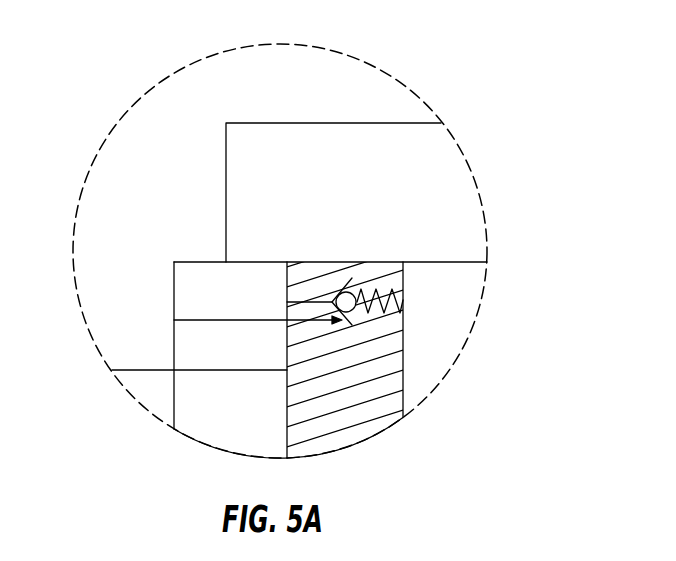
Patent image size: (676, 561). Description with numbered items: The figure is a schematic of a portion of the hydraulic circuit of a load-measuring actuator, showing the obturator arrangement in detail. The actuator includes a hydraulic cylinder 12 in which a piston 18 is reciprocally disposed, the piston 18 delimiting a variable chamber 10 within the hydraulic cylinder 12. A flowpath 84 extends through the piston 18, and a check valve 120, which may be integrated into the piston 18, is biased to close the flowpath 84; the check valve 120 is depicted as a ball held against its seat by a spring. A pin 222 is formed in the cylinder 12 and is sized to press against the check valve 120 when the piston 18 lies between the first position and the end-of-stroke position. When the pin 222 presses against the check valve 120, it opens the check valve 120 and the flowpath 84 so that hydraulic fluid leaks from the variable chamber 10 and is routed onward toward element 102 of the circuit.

The variable chamber 10 is at (448, 300).
The hydraulic cylinder 12 is at (174, 278).
The piston 18 is at (383, 400).
The flowpath 84 is at (330, 300).
The connection to 102 is at (418, 122).
The check valve 120 is at (347, 286).
The pin 222 is at (190, 321).